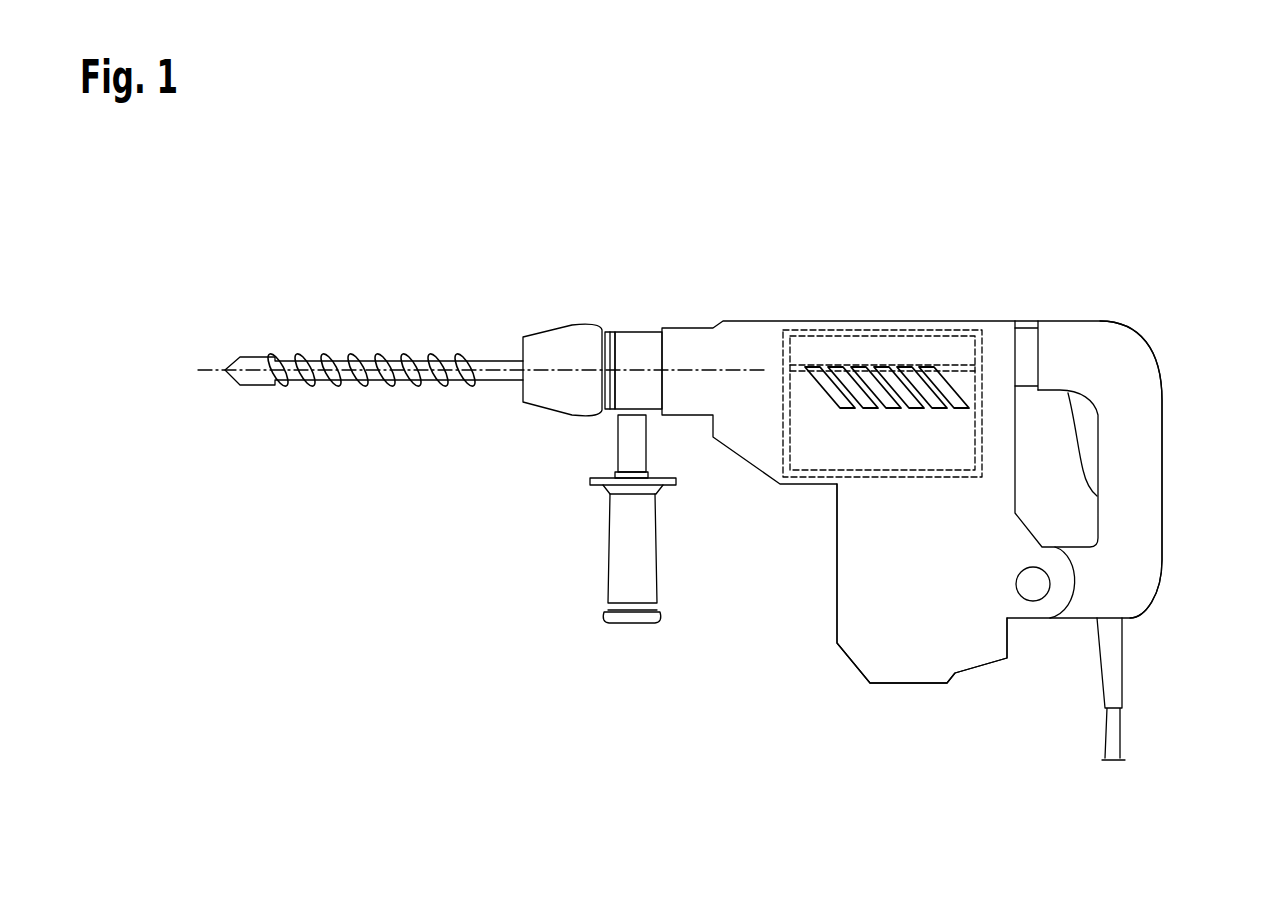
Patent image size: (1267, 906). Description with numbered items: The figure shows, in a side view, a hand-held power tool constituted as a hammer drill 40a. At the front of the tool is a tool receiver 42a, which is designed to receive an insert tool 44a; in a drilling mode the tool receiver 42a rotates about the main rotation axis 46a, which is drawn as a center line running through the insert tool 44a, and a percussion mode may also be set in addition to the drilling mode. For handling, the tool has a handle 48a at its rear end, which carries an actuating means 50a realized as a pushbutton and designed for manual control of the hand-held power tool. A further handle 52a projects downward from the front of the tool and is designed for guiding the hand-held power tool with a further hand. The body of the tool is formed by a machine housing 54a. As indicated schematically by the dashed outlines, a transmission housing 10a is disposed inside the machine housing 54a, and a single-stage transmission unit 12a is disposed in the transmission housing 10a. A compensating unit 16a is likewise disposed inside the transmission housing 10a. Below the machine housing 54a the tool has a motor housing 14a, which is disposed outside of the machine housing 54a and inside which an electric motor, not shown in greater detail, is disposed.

The transmission housing 10a is at (830, 330).
The single-stage transmission unit 12a is at (786, 420).
The motor housing 14a is at (858, 597).
The compensating unit 16a is at (910, 328).
The hammer drill 40a is at (720, 476).
The tool receiver 42a is at (562, 343).
The insert tool 44a is at (264, 378).
The main rotation axis 46a is at (210, 368).
The handle 48a is at (1127, 461).
The actuating means 50a is at (1087, 418).
The further handle 52a is at (627, 560).
The machine housing 54a is at (1000, 342).